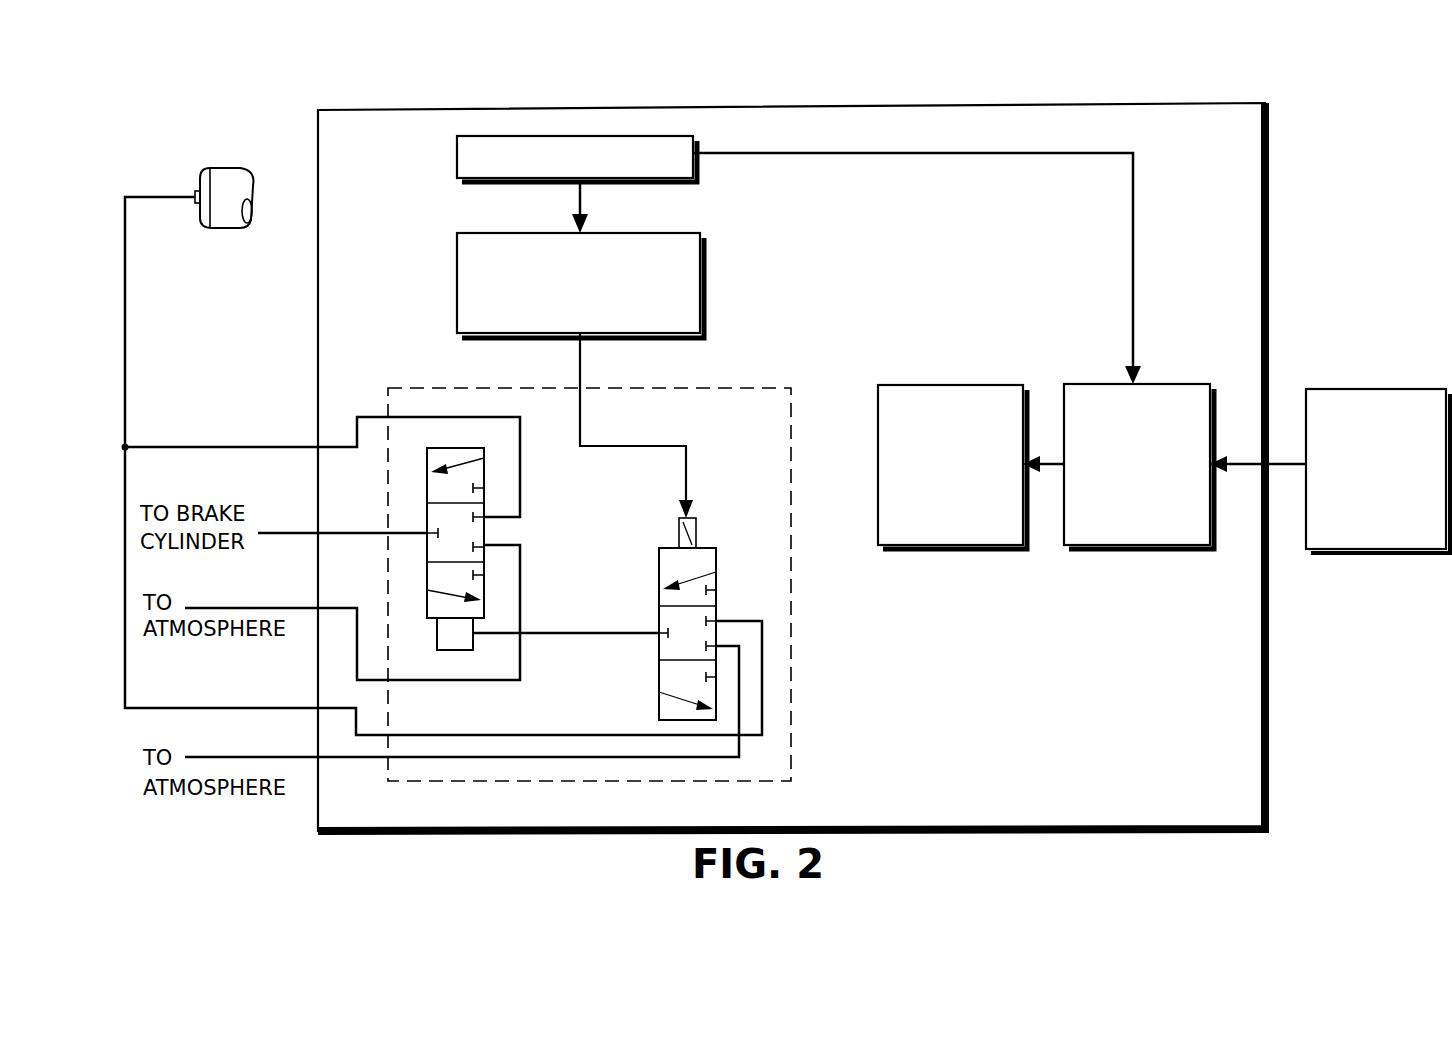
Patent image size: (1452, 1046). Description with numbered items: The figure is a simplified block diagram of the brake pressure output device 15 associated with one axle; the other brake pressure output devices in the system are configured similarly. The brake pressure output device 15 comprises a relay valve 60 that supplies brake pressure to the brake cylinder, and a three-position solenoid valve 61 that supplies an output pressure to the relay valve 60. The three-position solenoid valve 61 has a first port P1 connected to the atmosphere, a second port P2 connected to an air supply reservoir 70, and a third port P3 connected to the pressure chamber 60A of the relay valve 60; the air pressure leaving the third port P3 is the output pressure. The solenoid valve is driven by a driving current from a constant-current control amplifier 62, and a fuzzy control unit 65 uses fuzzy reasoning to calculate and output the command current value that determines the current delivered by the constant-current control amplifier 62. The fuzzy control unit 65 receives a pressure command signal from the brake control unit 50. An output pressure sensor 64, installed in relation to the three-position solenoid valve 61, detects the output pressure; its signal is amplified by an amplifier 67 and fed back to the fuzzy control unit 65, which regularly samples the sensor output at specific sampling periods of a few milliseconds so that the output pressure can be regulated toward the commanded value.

The brake pressure output device 15 is at (1032, 103).
The amplifier 67 is at (512, 136).
The output pressure sensor 64 is at (457, 306).
The constant-current control amplifier 62 is at (952, 467).
The fuzzy control unit 65 is at (1139, 466).
The brake control unit 50 is at (1378, 471).
The air supply reservoir 70 is at (219, 178).
The relay valve 60 is at (414, 643).
The pressure chamber 60A is at (467, 652).
The three-position solenoid valve 61 is at (724, 553).
The first port P1 is at (718, 648).
The second port P2 is at (718, 620).
The third port P3 is at (660, 638).